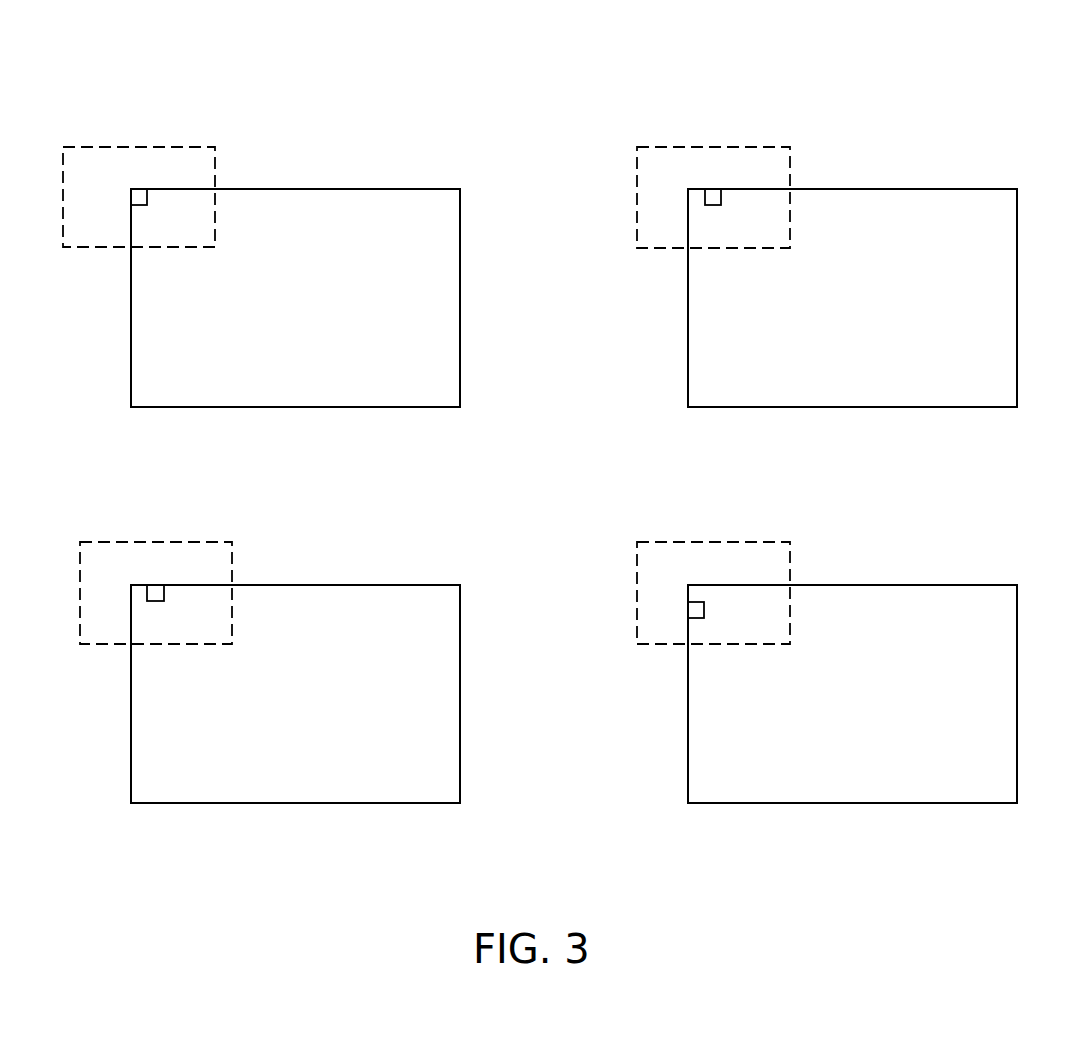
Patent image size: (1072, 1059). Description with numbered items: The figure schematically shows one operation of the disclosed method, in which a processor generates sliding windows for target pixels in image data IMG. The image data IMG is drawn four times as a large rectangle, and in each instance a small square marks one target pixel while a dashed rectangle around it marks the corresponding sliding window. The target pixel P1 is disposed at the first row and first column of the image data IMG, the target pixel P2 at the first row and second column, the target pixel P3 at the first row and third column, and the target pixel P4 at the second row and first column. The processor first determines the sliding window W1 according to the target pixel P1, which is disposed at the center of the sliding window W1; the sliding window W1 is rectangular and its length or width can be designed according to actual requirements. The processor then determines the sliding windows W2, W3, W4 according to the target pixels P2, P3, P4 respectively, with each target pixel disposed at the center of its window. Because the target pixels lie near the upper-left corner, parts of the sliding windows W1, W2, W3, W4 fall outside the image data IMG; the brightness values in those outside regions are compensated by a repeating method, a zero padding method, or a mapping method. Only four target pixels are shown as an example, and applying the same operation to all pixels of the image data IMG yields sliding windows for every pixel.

The image data IMG is at (327, 313).
The sliding window W1 is at (82, 146).
The sliding window W2 is at (656, 146).
The sliding window W3 is at (97, 541).
The sliding window W4 is at (653, 541).
The target pixel P1 is at (140, 189).
The target pixel P2 is at (714, 189).
The target pixel P3 is at (157, 585).
The target pixel P4 is at (698, 601).